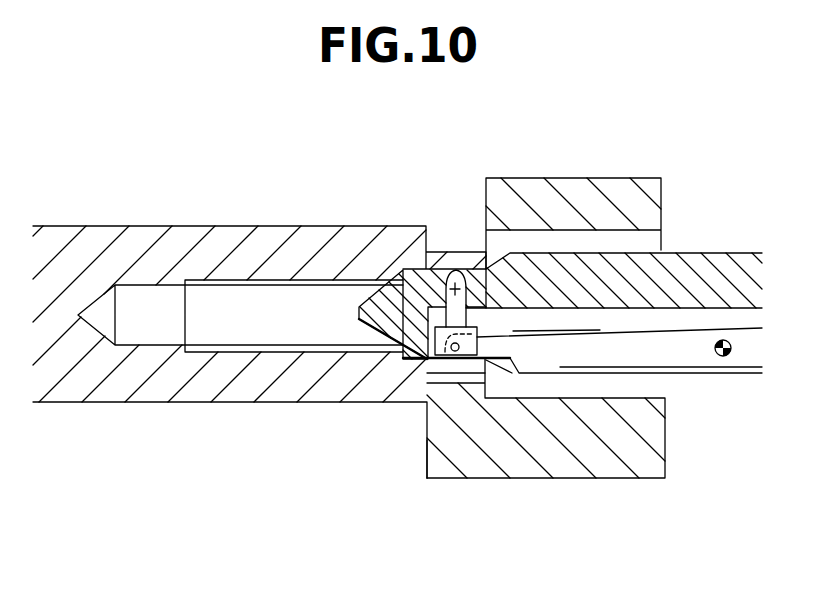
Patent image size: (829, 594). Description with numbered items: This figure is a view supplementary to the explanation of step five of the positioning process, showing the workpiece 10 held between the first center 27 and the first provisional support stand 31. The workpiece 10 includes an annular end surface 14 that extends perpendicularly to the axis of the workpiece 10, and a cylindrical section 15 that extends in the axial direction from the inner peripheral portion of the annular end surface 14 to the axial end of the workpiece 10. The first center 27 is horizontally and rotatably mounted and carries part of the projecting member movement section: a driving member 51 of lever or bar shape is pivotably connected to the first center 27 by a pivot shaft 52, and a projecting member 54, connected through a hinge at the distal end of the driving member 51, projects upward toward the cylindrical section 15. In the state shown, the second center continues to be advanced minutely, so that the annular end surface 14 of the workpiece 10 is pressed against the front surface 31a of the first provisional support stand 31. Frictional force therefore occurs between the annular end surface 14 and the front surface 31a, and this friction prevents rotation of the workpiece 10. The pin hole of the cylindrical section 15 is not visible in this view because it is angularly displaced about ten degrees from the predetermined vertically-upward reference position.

The workpiece 10 is at (165, 213).
The annular end surface 14 is at (427, 388).
The cylindrical section 15 is at (468, 272).
The first center 27 is at (708, 250).
The first provisional support stand 31 is at (556, 470).
The front surface 31a is at (428, 462).
The driving member 51 is at (675, 358).
The pivot shaft 52 is at (727, 356).
The projecting member 54 is at (452, 272).